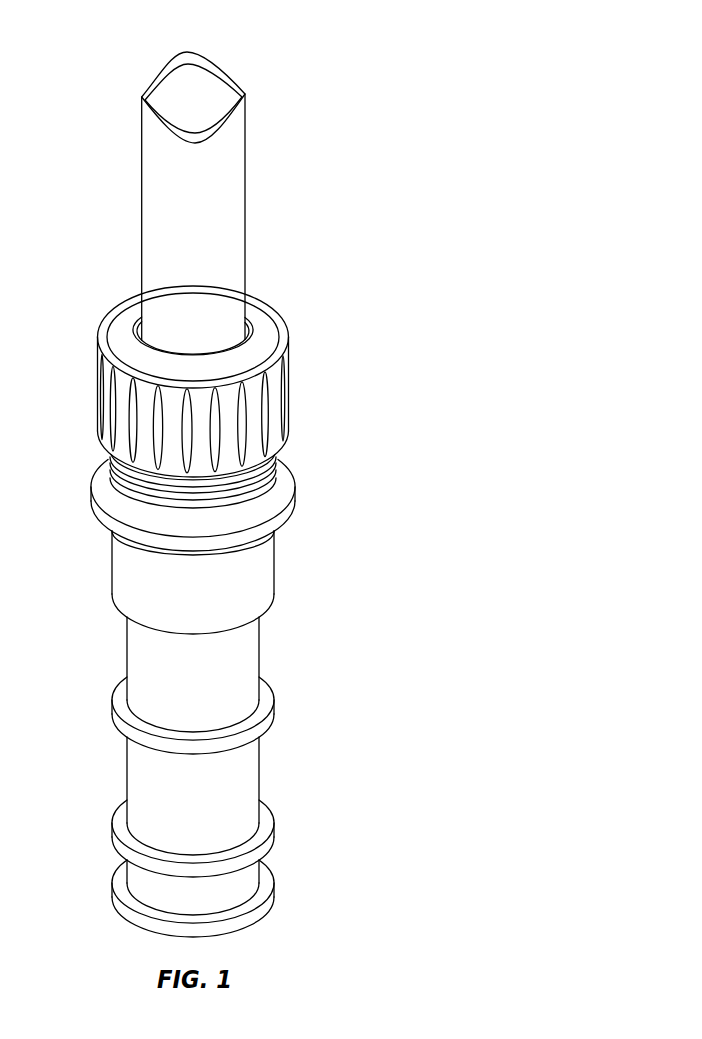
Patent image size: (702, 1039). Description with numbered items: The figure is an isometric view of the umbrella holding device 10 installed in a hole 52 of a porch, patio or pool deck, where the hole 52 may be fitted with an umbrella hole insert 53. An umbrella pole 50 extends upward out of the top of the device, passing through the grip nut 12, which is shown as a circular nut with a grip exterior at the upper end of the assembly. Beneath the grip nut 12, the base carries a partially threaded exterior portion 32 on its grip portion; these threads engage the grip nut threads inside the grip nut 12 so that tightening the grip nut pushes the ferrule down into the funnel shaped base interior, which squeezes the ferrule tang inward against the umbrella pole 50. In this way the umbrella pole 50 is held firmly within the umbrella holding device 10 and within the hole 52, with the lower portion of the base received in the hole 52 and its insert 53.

The umbrella holding device 10 is at (265, 95).
The umbrella pole 50 is at (217, 203).
The grip nut 12 is at (292, 321).
The partially threaded exterior portion 32 is at (247, 483).
The hole 52 is at (257, 508).
The umbrella hole insert 53 is at (175, 678).